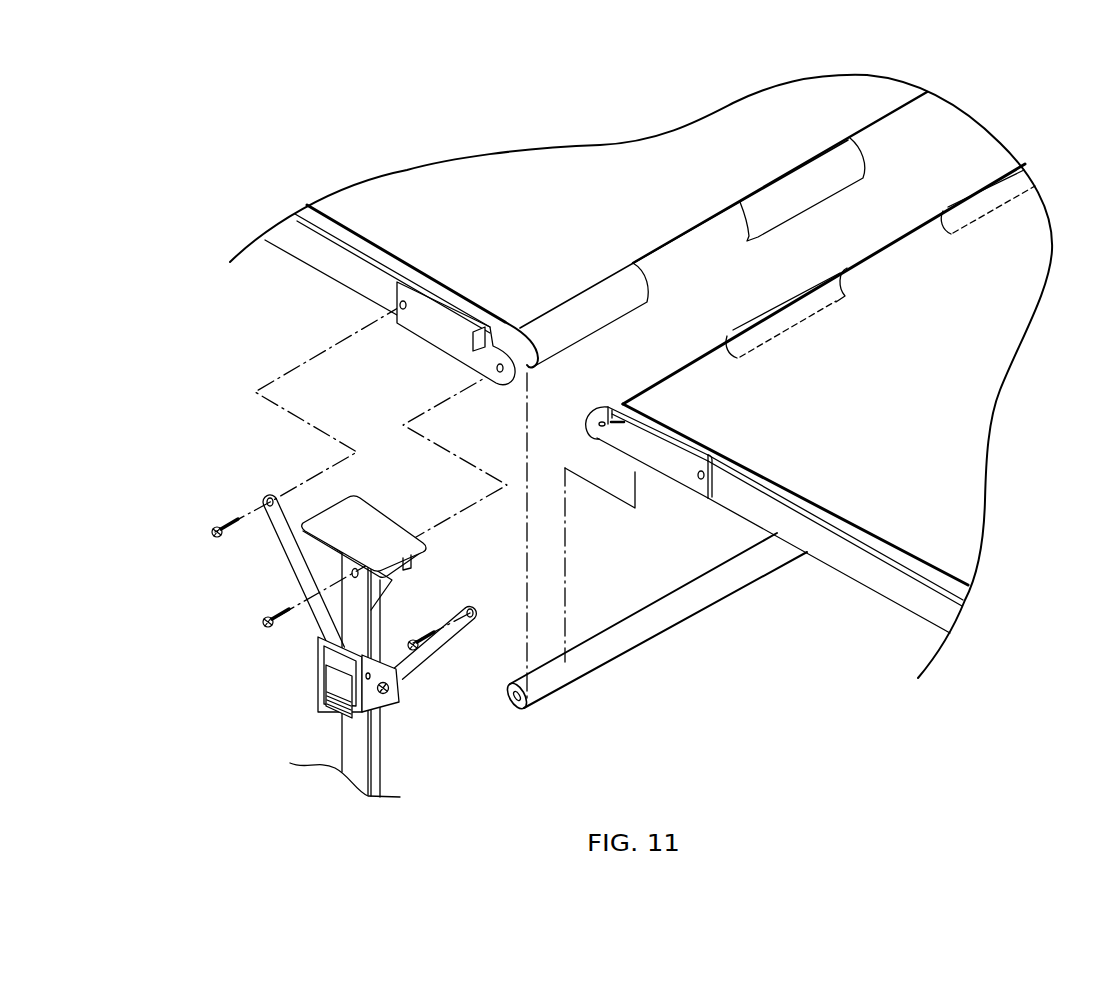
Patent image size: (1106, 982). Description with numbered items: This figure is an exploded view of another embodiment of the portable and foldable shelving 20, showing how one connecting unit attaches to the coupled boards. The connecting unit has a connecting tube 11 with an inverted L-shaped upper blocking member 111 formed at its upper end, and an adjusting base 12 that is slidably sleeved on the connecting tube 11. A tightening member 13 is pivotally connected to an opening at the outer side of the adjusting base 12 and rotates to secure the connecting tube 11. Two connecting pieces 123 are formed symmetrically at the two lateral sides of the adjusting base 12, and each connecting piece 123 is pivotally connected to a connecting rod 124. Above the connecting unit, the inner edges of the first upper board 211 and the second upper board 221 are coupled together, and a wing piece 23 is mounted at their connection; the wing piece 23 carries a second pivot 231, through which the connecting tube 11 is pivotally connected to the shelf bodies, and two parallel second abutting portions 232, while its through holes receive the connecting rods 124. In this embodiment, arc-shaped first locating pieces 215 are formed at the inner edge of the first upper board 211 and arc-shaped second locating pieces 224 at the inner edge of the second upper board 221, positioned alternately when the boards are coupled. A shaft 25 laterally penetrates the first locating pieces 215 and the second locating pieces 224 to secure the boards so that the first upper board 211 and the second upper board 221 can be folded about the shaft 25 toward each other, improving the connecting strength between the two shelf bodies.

The connecting tube 11 is at (348, 750).
The upper blocking member 111 is at (333, 530).
The adjusting base 12 is at (325, 673).
The connecting piece 123 is at (397, 700).
The connecting rod 124 is at (427, 660).
The tightening member 13 is at (323, 703).
The shelving 20 is at (270, 591).
The first upper board 211 is at (960, 383).
The first locating pieces 215 is at (813, 308).
The second upper board 221 is at (420, 213).
The second locating pieces 224 is at (588, 327).
The wing piece 23 is at (675, 450).
The second pivot 231 is at (607, 409).
The second abutting portions 232 is at (588, 412).
The shaft 25 is at (666, 618).